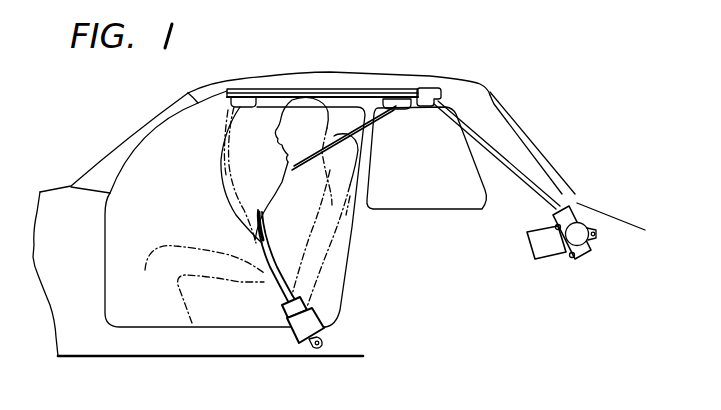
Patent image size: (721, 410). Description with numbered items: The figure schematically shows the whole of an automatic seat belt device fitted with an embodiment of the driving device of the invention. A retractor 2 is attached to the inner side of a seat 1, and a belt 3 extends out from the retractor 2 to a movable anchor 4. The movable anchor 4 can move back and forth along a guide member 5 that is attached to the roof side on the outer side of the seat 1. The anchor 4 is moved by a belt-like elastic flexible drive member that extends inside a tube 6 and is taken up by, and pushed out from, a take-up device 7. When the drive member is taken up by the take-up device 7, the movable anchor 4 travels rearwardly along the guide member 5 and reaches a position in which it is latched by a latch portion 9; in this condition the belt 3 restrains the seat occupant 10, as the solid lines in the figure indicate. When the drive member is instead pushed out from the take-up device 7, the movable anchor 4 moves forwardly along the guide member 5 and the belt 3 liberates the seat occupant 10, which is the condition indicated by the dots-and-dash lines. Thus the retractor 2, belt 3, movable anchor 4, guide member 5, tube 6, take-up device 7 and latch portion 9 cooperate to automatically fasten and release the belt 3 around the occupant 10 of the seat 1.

The seat 1 is at (337, 224).
The retractor 2 is at (297, 334).
The belt 3 is at (270, 272).
The movable anchor 4 is at (406, 99).
The guide member 5 is at (267, 89).
The tube 6 is at (517, 185).
The take-up device 7 is at (580, 231).
The latch portion 9 is at (428, 88).
The seat occupant 10 is at (182, 246).